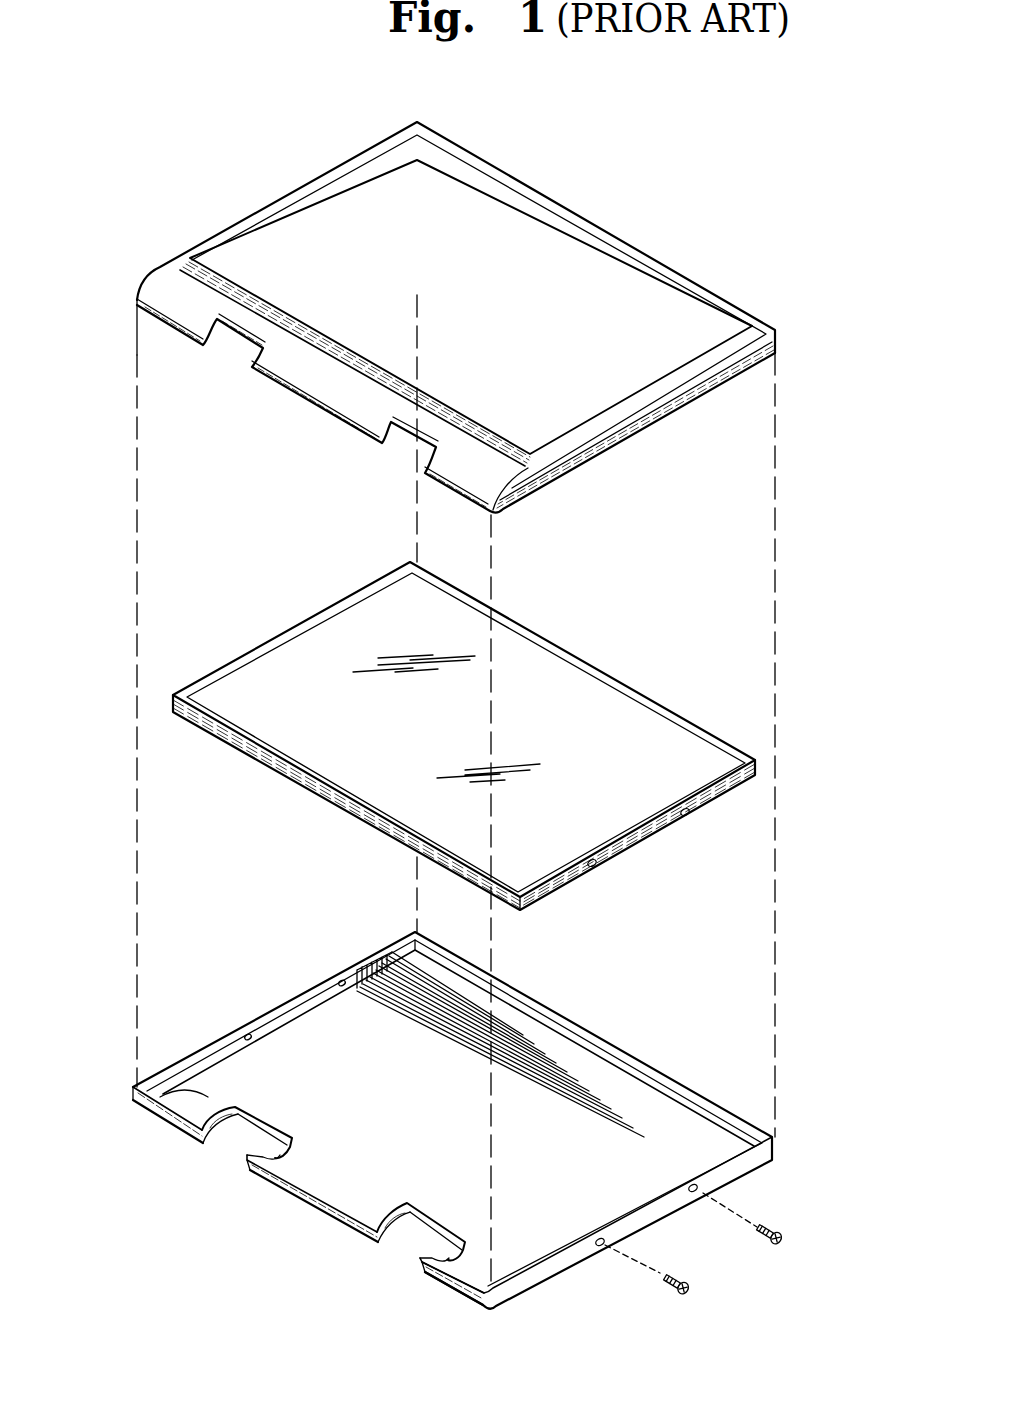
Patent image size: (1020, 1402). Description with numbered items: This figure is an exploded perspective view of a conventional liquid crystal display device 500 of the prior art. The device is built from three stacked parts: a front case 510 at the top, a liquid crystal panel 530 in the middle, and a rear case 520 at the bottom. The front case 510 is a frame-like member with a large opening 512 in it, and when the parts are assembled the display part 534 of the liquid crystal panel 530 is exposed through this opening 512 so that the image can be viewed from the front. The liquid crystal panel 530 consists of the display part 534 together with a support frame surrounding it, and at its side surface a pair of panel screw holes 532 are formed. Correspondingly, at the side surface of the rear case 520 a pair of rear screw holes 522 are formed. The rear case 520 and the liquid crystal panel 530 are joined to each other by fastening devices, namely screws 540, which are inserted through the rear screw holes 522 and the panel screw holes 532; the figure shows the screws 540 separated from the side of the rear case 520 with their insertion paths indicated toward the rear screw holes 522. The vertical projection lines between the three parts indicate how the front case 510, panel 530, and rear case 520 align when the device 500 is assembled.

The liquid crystal display device 500 is at (333, 100).
The front case 510 is at (456, 317).
The opening 512 is at (520, 323).
The rear case 520 is at (418, 1126).
The rear screw holes 522 is at (602, 1247).
The liquid crystal panel 530 is at (464, 736).
The panel screw holes 532 is at (595, 867).
The display part 534 is at (415, 740).
The screws 540 is at (700, 1292).